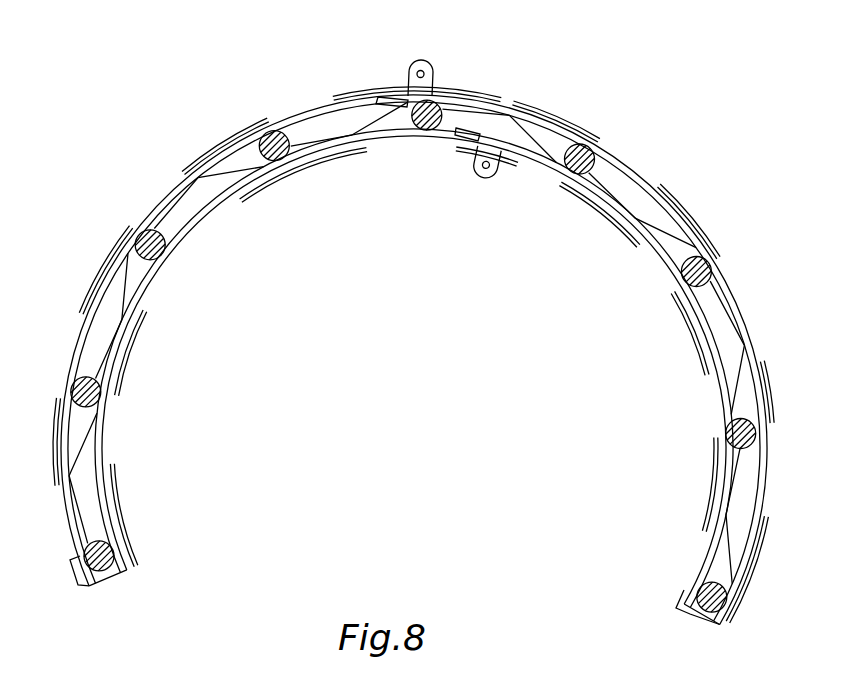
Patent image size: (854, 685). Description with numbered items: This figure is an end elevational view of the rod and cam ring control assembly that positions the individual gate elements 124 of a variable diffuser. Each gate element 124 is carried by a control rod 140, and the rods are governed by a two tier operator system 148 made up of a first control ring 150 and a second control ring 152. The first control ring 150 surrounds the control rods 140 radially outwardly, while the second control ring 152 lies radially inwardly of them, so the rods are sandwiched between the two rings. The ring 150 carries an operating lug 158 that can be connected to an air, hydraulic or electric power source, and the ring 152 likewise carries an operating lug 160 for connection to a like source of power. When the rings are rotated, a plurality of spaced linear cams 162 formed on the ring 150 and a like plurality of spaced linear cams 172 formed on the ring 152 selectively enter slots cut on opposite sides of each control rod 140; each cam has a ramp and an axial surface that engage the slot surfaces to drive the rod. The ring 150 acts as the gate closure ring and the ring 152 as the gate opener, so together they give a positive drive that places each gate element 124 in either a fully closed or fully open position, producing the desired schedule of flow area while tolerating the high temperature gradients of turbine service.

The gate element 124 is at (98, 273).
The control rod 140 is at (260, 138).
The two tier operator system 148 is at (318, 96).
The first control ring 150 is at (292, 120).
The second control ring 152 is at (388, 138).
The operating lug 158 is at (411, 66).
The operating lug 160 is at (493, 179).
The linear cam 162 is at (382, 97).
The linear cam 172 is at (470, 141).